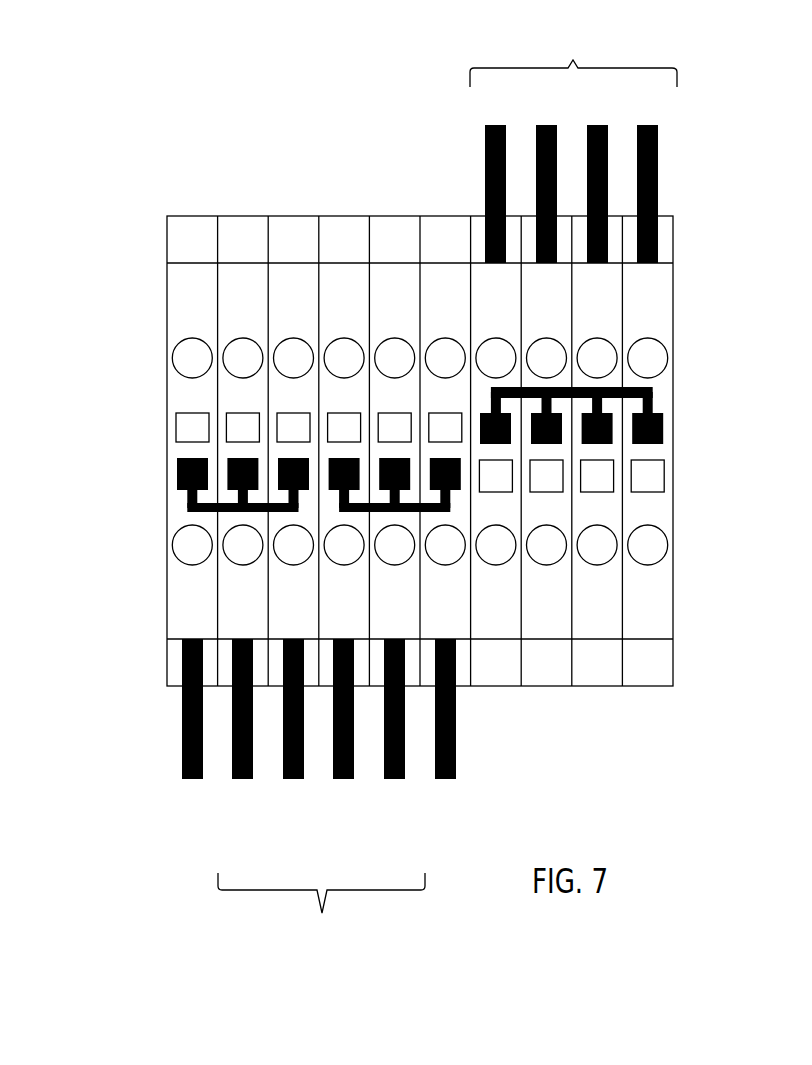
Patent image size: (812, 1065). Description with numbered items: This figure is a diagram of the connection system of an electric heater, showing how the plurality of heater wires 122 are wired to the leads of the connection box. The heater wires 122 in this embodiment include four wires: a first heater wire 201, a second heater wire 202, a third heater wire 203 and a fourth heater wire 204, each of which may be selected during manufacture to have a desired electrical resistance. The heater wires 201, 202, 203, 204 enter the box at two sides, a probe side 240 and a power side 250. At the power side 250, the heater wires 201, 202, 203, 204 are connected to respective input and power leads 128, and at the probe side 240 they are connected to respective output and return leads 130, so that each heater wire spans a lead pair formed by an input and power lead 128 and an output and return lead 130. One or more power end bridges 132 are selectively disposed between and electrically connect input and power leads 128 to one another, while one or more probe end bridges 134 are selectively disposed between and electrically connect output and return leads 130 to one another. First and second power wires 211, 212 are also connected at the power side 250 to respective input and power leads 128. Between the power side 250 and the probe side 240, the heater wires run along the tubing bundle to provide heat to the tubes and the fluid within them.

The plurality of heater wires 122 is at (573, 60).
The input and power lead 128 is at (177, 460).
The output and return lead 130 is at (494, 445).
The power end bridge 132 is at (212, 514).
The probe end bridge 134 is at (513, 387).
The first heater wire 201 is at (484, 160).
The second heater wire 202 is at (547, 125).
The third heater wire 203 is at (597, 125).
The fourth heater wire 204 is at (658, 162).
The first power wire 211 is at (180, 740).
The second power wire 212 is at (457, 755).
The probe side 240 is at (166, 322).
The power side 250 is at (663, 607).